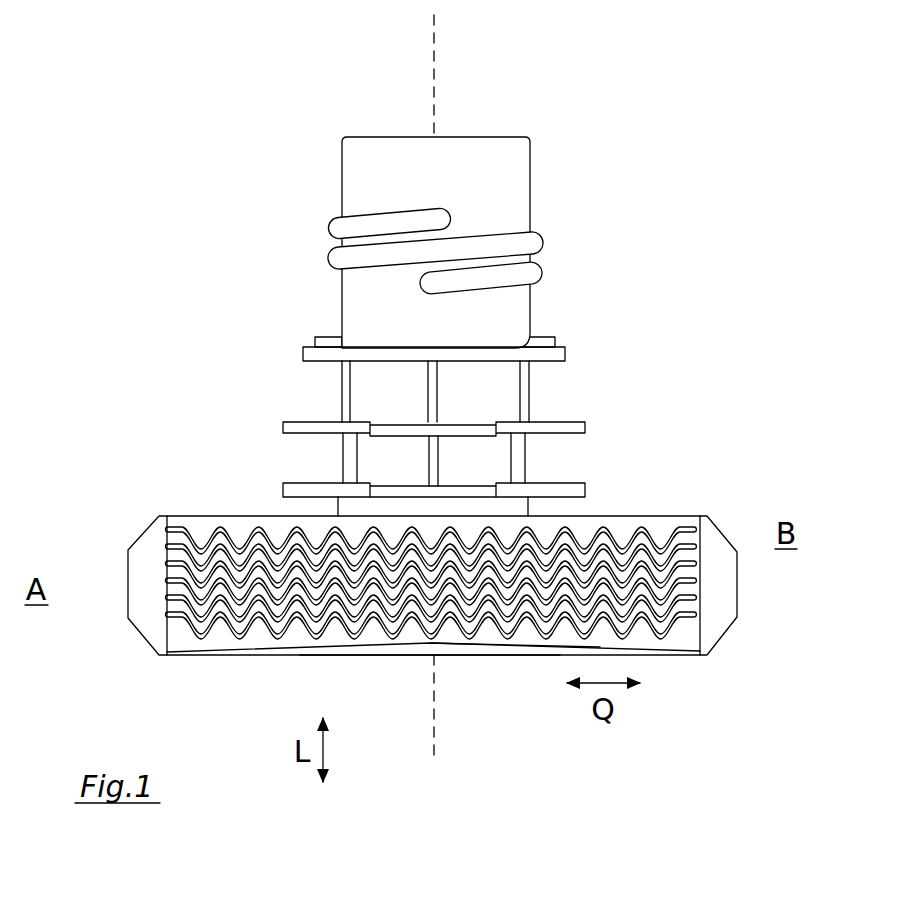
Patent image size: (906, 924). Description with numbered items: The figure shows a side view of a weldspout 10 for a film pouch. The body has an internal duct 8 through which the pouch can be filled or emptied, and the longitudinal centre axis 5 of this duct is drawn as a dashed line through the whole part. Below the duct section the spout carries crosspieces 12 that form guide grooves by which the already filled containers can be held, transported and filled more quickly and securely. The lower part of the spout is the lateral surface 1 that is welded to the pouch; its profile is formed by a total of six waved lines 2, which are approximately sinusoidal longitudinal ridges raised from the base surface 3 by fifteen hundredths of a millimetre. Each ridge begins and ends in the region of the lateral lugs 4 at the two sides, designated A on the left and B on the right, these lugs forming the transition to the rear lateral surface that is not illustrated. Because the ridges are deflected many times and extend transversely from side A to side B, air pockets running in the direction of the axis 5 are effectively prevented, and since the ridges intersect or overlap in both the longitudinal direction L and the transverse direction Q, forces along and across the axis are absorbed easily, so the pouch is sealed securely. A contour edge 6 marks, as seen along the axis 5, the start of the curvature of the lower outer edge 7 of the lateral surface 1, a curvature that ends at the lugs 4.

The connection arrangement 10 is at (180, 122).
The internal duct 8 is at (376, 122).
The longitudinal centre axis 5 is at (437, 55).
The crosspieces 12 is at (292, 490).
The lateral surface 1 is at (662, 527).
The waved lines 2 is at (177, 530).
The lateral lugs 4 is at (148, 562).
The surface 3 is at (218, 637).
The lower outer edge 7 is at (392, 650).
The contour edge 6 is at (517, 643).